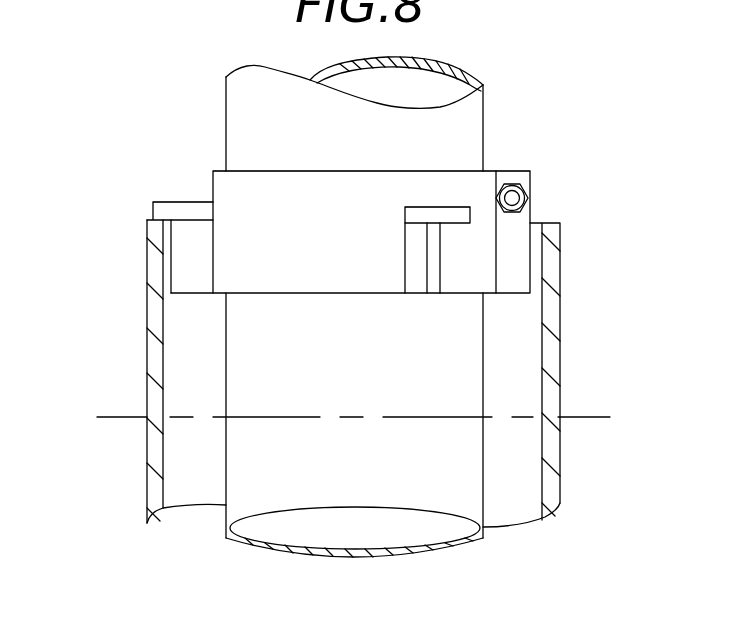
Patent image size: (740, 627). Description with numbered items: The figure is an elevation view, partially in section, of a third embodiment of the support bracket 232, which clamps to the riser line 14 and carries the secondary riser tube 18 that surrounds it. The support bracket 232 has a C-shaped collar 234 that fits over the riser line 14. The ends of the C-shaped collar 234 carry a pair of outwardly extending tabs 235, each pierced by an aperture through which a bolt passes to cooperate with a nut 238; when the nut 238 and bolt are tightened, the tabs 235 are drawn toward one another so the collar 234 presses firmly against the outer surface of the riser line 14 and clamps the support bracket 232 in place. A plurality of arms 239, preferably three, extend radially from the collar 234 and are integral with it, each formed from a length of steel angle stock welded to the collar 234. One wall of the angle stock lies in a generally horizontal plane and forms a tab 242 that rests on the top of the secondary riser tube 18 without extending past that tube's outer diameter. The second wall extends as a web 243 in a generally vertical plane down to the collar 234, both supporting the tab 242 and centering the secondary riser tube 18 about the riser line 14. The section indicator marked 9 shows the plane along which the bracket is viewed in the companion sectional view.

The riser line 14 is at (452, 505).
The secondary riser tube 18 is at (150, 460).
The support bracket 232 is at (500, 162).
The C-shaped collar 234 is at (303, 270).
The tabs 235 is at (522, 238).
The nut 238 is at (530, 186).
The arms 239 is at (173, 200).
The tab 242 is at (440, 212).
The web 243 is at (185, 257).
The section line 9- 9 is at (608, 375).